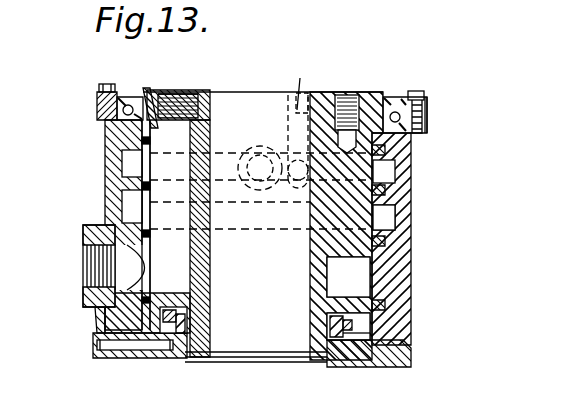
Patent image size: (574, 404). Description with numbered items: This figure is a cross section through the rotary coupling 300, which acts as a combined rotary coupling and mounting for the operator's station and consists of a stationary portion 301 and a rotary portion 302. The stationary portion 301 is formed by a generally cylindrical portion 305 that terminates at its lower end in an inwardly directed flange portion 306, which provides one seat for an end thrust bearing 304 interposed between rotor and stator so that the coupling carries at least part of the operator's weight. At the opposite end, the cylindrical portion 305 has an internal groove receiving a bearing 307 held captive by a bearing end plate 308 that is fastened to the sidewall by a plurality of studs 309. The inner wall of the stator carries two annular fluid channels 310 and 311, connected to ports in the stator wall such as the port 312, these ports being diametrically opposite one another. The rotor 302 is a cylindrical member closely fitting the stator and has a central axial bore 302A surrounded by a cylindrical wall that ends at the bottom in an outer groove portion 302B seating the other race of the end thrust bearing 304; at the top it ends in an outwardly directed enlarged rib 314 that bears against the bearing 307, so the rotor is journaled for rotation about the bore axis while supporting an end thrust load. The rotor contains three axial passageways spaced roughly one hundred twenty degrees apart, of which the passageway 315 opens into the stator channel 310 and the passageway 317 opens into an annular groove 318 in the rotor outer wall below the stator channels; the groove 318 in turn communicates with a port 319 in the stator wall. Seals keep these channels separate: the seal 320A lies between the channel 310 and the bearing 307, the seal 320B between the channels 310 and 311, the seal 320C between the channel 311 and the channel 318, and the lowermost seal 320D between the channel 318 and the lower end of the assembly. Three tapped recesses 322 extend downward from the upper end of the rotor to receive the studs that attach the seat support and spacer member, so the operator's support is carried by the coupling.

The rotary coupling 300 is at (85, 216).
The stationary portion 301 is at (411, 276).
The rotary portion 302 is at (366, 96).
The central axial bore 302A is at (213, 103).
The outer groove portion 302B is at (187, 322).
The end thrust bearing 304 is at (363, 328).
The cylindrical portion 305 is at (396, 227).
The inwardly directed flange portion 306 is at (410, 352).
The bearing 307 is at (412, 121).
The bearing end plate 308 is at (428, 101).
The studs 309 is at (103, 85).
The annular groove or fluid channel 310 is at (145, 208).
The annular groove or fluid channel 311 is at (158, 195).
The port 312 is at (262, 148).
The outwardly directed enlarged rib 314 is at (148, 122).
The axial passageway 315 is at (304, 83).
The axial passageway 317 is at (188, 98).
The annular groove 318 is at (360, 285).
The port 319 is at (130, 262).
The seal 320A is at (372, 151).
The seal 320B is at (372, 190).
The seal 320C is at (372, 241).
The seal 320D is at (372, 306).
The tapped recesses 322 is at (338, 104).